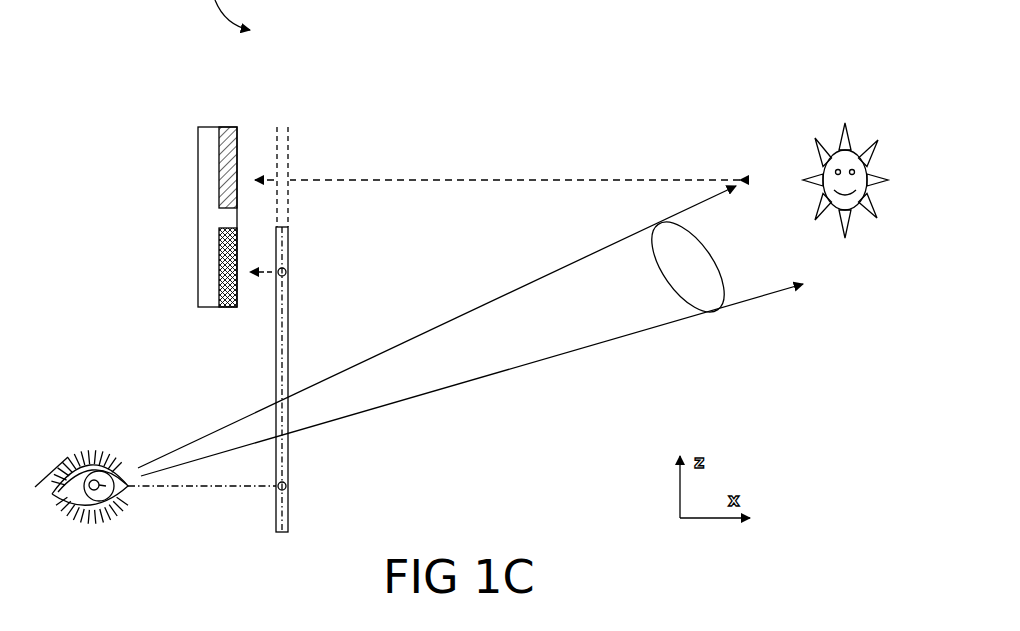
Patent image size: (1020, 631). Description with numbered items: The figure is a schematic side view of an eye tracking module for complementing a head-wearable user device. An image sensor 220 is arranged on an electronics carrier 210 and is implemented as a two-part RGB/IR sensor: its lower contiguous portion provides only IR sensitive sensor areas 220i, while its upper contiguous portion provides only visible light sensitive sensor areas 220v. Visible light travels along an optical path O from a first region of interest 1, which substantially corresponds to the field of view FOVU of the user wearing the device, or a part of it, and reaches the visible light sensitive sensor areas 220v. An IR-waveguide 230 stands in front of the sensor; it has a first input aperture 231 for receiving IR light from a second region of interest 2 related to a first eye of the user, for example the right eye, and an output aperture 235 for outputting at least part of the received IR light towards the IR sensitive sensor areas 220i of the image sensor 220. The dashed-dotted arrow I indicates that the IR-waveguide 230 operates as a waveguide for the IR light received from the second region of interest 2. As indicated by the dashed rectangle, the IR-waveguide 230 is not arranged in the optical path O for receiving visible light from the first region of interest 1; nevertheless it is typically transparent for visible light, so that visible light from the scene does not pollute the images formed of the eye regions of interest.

The first region of interest 1 is at (851, 106).
The second region of interest 2 is at (110, 444).
The electronics carrier 210 is at (213, 133).
The image sensor 220 is at (235, 312).
The visible light sensitive sensor areas 220v is at (224, 175).
The IR sensitive sensor areas 220i is at (229, 250).
The IR-waveguide 230 is at (284, 250).
The first input aperture 231 is at (296, 490).
The output aperture 235 is at (296, 275).
The optical path O is at (474, 166).
The IR light path I is at (226, 498).
The field of view of the user FOVU is at (698, 328).